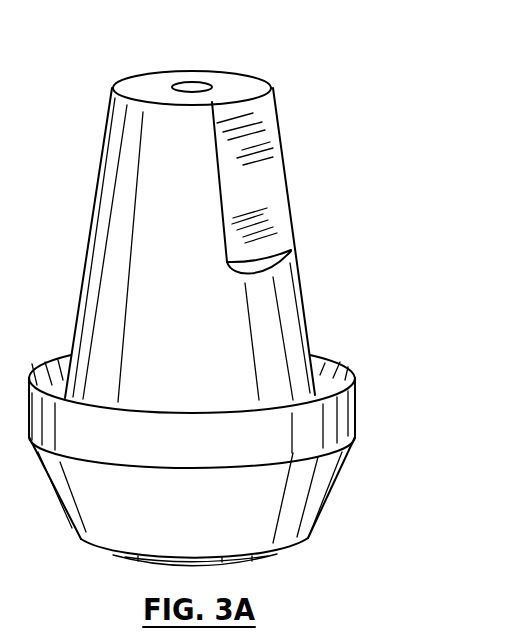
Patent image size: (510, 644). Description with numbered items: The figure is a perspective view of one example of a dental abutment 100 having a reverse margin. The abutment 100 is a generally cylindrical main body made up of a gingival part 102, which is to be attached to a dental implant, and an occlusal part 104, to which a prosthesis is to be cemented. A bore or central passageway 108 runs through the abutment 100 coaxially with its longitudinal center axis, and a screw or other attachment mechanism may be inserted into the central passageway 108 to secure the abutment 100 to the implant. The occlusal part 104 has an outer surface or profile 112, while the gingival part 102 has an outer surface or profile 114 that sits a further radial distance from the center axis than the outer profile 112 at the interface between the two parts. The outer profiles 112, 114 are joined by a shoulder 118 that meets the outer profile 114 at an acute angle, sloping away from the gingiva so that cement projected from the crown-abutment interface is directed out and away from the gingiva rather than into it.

The abutment 100 is at (256, 292).
The gingival part 102 is at (256, 447).
The occlusal part 104 is at (237, 210).
The central passageway 108 is at (190, 87).
The outer profile 112 is at (300, 302).
The outer profile 114 is at (330, 497).
The shoulder 118 is at (335, 378).